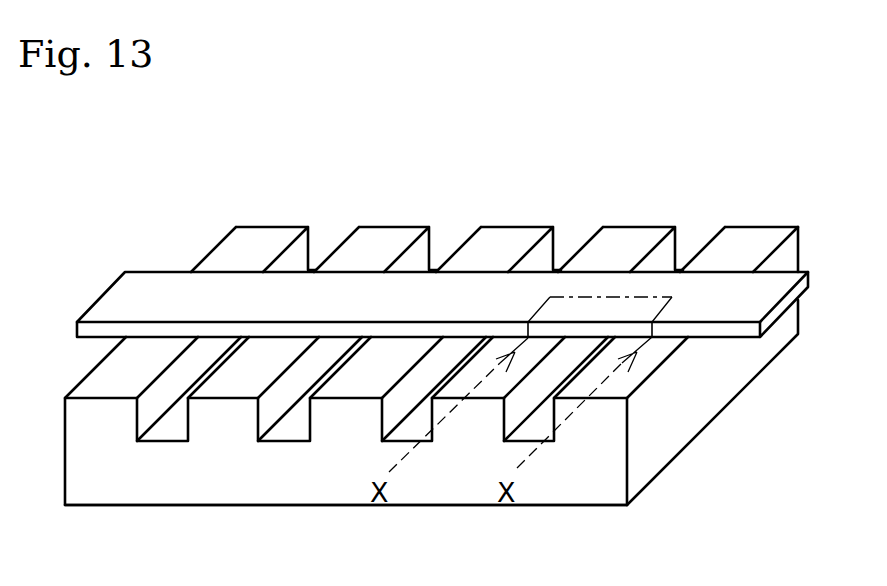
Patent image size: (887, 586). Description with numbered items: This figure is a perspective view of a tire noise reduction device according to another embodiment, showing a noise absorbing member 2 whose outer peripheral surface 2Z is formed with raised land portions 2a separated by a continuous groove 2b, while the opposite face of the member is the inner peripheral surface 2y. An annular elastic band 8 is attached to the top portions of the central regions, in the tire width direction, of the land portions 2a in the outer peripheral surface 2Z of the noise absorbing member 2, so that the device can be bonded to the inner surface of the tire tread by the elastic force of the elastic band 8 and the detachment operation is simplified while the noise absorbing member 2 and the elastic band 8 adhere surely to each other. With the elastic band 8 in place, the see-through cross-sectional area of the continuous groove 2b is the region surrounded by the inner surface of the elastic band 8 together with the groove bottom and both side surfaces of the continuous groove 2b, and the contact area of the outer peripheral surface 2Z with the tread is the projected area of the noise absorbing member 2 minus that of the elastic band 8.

The noise absorbing member 2 is at (645, 198).
The land portions 2a is at (382, 237).
The continuous groove 2b is at (448, 242).
The outer peripheral surface 2Z is at (757, 223).
The inner peripheral surface 2y is at (558, 507).
The elastic band 8 is at (782, 285).